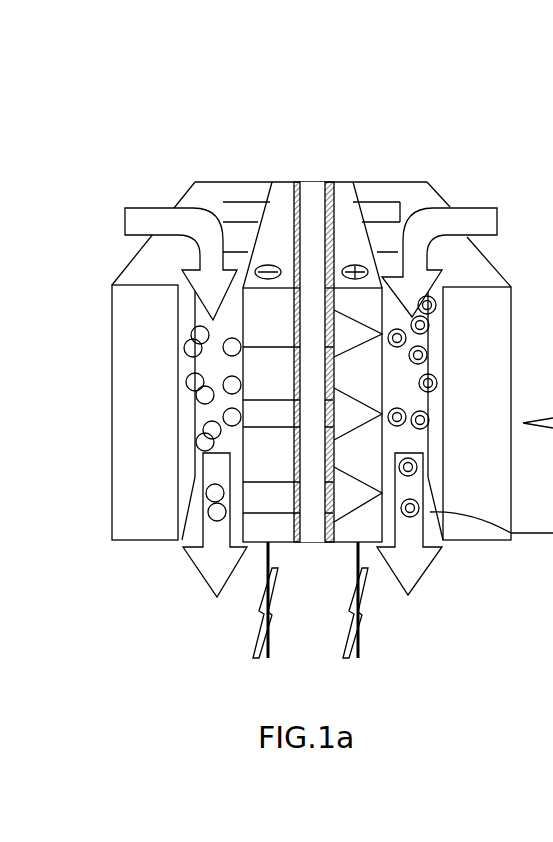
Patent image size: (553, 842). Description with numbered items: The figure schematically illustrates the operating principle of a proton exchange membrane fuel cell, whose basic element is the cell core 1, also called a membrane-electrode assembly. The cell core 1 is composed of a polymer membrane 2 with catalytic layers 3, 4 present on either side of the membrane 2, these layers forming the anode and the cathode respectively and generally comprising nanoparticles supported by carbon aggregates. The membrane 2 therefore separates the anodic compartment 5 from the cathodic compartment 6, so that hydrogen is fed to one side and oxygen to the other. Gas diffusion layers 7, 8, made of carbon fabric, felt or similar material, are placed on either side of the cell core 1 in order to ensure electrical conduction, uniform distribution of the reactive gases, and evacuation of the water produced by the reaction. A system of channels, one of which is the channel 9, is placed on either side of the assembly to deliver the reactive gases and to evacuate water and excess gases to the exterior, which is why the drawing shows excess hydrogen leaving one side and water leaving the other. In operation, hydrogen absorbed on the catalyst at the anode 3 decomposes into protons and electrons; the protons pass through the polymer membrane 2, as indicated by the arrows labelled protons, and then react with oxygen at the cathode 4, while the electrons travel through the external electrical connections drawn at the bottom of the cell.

The cell core 1 is at (347, 92).
The polymer membrane 2 is at (310, 195).
The catalytic layer 3 is at (297, 195).
The catalytic layer 4 is at (327, 195).
The anodic compartment 5 is at (295, 177).
The cathodic compartment 6 is at (427, 177).
The gas diffusion layer 7 is at (257, 370).
The gas diffusion layer 8 is at (367, 388).
The channel 9 is at (193, 512).